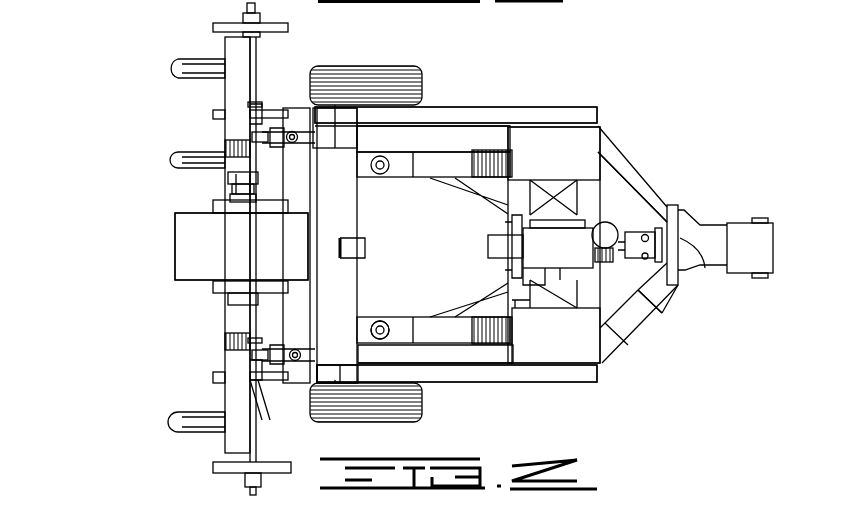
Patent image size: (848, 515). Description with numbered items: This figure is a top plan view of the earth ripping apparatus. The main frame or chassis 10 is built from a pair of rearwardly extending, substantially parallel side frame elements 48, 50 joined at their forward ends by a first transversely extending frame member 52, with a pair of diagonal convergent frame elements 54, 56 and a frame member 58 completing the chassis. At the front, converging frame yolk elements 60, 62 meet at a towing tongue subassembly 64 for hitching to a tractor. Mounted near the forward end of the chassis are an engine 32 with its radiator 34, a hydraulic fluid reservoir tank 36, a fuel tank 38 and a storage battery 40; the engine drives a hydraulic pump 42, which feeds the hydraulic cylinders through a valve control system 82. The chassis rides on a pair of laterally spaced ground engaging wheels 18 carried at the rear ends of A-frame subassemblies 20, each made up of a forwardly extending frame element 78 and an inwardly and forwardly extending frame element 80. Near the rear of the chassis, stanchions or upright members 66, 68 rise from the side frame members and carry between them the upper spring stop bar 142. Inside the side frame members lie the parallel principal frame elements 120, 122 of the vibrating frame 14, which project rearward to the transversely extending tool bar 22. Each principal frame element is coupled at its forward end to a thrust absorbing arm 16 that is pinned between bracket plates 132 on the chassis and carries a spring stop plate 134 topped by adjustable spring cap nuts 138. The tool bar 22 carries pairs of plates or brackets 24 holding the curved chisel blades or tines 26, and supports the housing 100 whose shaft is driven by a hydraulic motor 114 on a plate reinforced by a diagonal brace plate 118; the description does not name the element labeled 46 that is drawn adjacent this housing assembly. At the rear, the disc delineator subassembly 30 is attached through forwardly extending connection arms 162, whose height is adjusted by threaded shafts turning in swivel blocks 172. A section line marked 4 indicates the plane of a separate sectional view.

The section line 4- 4 is at (65, 226).
The main frame or chassis 10 is at (655, 160).
The vibrating frame 14 is at (276, 178).
The thrust absorbing arms 16 is at (432, 195).
The ground engaging wheels 18 is at (380, 67).
The A-frame subassemblies 20 is at (440, 100).
The tool bar 22 is at (252, 40).
The plates or brackets 24 is at (200, 55).
The chisel blade or tine 26 is at (178, 70).
The disc delineator subassembly 30 is at (226, 468).
The engine 32 is at (574, 250).
The radiator 34 is at (678, 215).
The hydraulic fluid reservoir tank 36 is at (568, 158).
The fuel tank 38 is at (571, 349).
The storage battery 40 is at (635, 318).
The hydraulic pump 42 is at (488, 248).
The feed assembly 46 is at (195, 242).
The side frame element 48 is at (425, 126).
The side frame element 50 is at (470, 365).
The first transversely extending frame member 52 is at (612, 178).
The diagonal convergent frame element 54 is at (575, 172).
The diagonal convergent frame element 56 is at (560, 290).
The frame member 58 is at (522, 310).
The frame yolk element 60 is at (690, 190).
The frame yolk element 62 is at (660, 295).
The towing tongue subassembly 64 is at (733, 225).
The stanchion or upright member 66 is at (325, 370).
The stanchion or upright member 68 is at (325, 108).
The forwardly extending frame element 78 is at (470, 107).
The inwardly and forwardly extending frame element 80 is at (490, 190).
The valve control system 82 is at (650, 245).
The housing 100 is at (252, 259).
The hydraulic motor 114 is at (228, 190).
The diagonal brace plate 118 is at (250, 112).
The principal frame element 120 is at (265, 330).
The principal frame element 122 is at (292, 128).
The bracket plates 132 is at (490, 150).
The spring stop plate 134 is at (400, 168).
The adjustable spring cap nuts 138 is at (375, 320).
The upper spring stop bar 142 is at (340, 236).
The connection arms 162 is at (290, 130).
The swivel block 172 is at (248, 398).